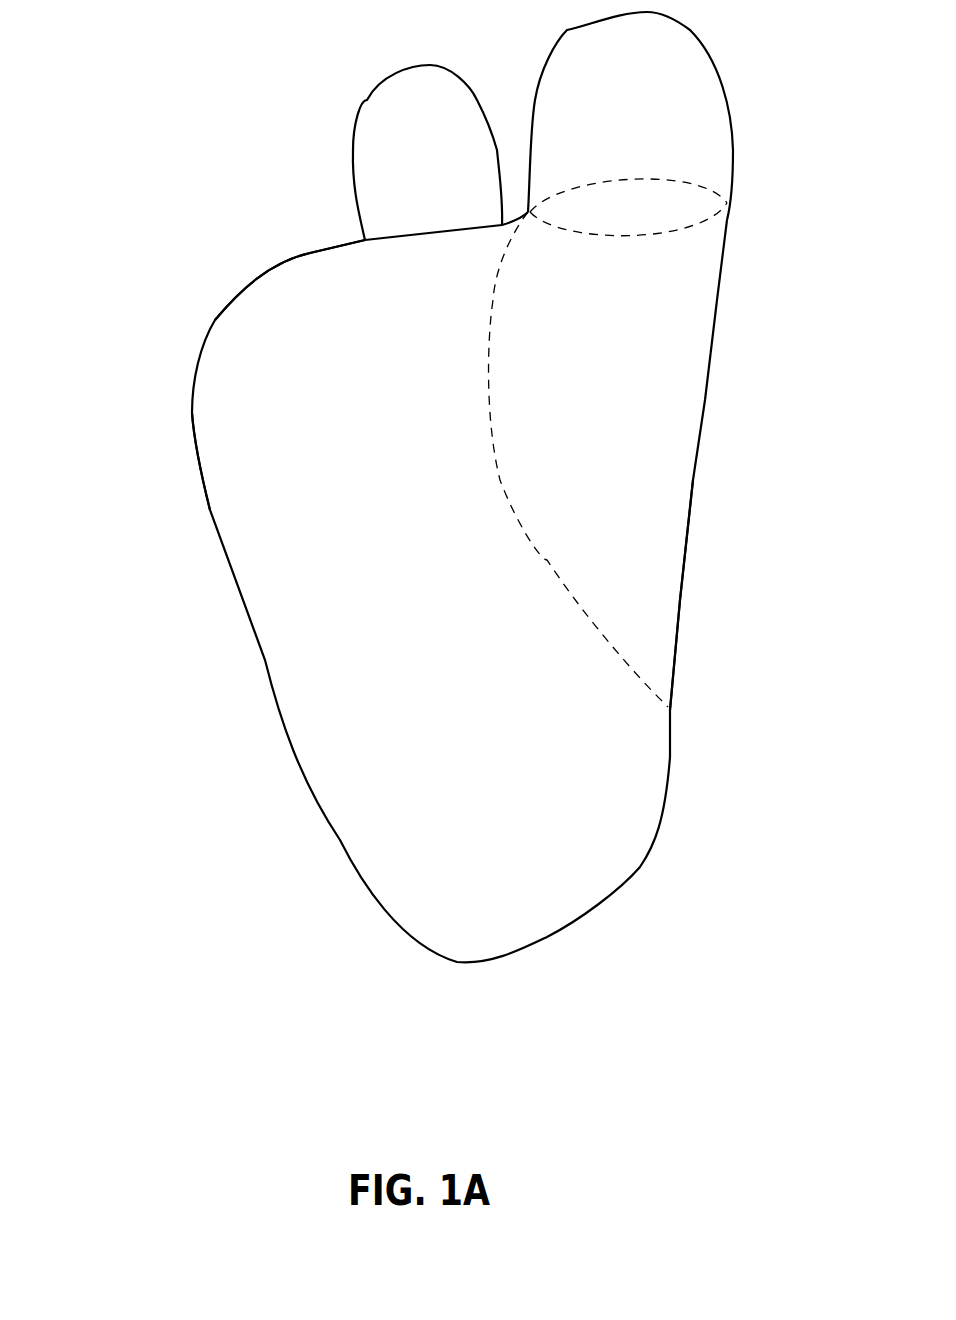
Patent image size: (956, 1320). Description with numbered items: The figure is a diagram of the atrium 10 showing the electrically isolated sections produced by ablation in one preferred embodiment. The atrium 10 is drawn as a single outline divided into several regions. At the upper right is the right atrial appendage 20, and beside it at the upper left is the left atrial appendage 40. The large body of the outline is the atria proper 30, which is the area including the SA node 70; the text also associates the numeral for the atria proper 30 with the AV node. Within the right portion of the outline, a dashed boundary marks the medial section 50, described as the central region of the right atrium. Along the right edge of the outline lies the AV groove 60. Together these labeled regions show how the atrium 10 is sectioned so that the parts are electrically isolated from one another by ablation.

The atrium 10 is at (398, 969).
The right atrial appendage 20 is at (672, 68).
The atria proper 30 is at (230, 425).
The left atrial appendage 40 is at (402, 115).
The medial section 50 is at (622, 458).
The AV groove 60 is at (680, 600).
The SA node 70 is at (313, 287).